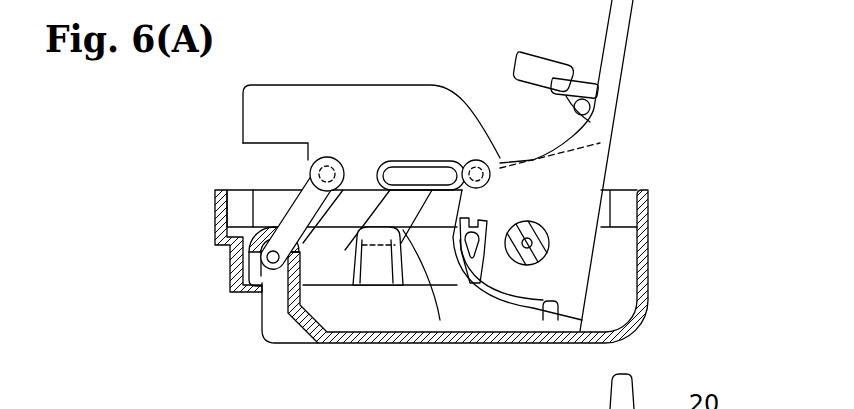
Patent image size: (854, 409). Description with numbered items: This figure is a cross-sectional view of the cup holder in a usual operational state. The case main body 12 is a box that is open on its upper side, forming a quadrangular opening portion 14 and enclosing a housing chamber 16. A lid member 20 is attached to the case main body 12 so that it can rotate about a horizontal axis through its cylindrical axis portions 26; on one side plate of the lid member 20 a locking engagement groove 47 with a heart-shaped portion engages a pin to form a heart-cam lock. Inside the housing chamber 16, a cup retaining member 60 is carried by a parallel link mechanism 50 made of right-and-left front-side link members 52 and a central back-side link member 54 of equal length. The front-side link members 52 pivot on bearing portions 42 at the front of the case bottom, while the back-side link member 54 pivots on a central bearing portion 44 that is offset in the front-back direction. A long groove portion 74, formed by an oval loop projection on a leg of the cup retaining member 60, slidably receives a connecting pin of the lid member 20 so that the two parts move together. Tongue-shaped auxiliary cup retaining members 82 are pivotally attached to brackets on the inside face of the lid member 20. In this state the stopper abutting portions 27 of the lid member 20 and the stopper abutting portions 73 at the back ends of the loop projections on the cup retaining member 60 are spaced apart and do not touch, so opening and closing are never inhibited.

The case main body 12 is at (654, 249).
The opening portion 14 is at (267, 192).
The housing chamber 16 is at (447, 273).
The lid member 20 is at (633, 43).
The cylindrical axis portion 26 is at (528, 221).
The stopper abutting portion 27 is at (500, 158).
The bearing portion 42 is at (260, 236).
The bearing portion 44 is at (377, 280).
The locking engagement groove 47 is at (462, 302).
The parallel link mechanism 50 is at (297, 171).
The front-side link member 52 is at (287, 211).
The back-side link member 54 is at (440, 320).
The cup retaining member 60 is at (336, 83).
The stopper abutting portion 73 is at (477, 158).
The long groove portion 74 is at (410, 173).
The auxiliary cup retaining member 82 is at (535, 55).